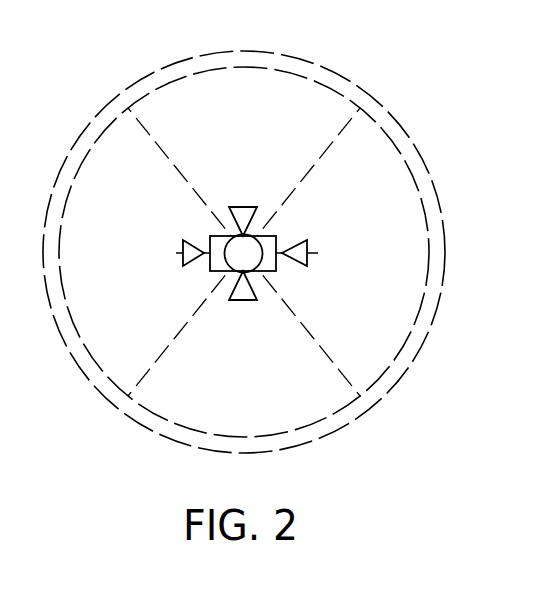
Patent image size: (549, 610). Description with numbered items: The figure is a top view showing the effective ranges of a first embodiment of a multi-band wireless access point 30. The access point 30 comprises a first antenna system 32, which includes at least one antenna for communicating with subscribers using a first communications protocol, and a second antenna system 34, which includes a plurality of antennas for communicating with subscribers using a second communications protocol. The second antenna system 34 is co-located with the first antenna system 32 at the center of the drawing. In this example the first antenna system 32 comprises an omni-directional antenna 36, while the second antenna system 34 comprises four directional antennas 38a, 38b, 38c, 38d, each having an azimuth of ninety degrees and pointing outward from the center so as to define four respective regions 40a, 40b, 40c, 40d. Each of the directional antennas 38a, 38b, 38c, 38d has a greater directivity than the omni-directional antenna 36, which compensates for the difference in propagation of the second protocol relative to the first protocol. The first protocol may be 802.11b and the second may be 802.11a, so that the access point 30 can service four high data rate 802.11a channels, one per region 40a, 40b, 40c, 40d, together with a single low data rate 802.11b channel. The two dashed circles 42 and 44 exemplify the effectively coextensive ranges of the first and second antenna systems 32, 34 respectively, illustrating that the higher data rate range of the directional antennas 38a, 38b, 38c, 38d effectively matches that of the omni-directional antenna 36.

The multi-band wireless access point 30 is at (244, 245).
The first antenna system 32 is at (286, 272).
The second antenna system 34 is at (285, 272).
The omni-directional antenna 36 is at (223, 261).
The directional antenna 38a is at (306, 240).
The directional antenna 38b is at (243, 207).
The directional antenna 38c is at (186, 245).
The directional antenna 38d is at (243, 300).
The region 40a is at (401, 264).
The region 40b is at (257, 132).
The region 40c is at (111, 292).
The region 40d is at (250, 400).
The circle 42 is at (337, 73).
The circle 44 is at (363, 105).